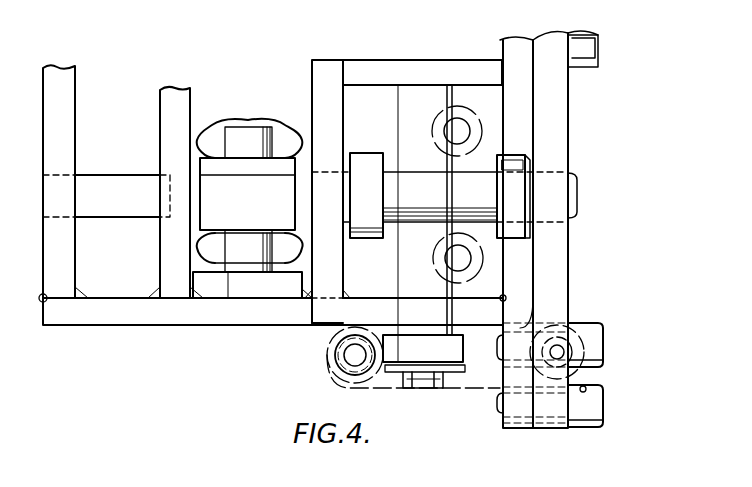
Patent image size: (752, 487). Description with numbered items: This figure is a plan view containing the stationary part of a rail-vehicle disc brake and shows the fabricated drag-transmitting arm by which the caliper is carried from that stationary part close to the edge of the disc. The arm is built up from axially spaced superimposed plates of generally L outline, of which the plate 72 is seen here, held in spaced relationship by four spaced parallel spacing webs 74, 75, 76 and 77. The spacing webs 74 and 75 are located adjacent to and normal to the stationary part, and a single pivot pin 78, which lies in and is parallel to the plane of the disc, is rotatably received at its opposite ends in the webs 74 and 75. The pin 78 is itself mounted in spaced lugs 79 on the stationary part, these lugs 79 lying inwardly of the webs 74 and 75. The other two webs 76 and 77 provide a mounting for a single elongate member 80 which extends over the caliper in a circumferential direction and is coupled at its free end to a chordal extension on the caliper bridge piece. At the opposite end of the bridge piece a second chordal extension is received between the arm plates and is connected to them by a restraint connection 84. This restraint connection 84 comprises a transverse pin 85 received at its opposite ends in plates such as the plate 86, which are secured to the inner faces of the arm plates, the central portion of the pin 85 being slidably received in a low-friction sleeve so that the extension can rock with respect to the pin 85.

The plate 72 is at (237, 307).
The spacing web 74 is at (548, 157).
The spacing web 75 is at (328, 110).
The spacing web 76 is at (168, 118).
The spacing web 77 is at (57, 98).
The pivot pin 78 is at (475, 190).
The lugs 79 is at (367, 163).
The elongate member 80 is at (107, 198).
The restraint connection 84 is at (246, 163).
The transverse pin 85 is at (252, 263).
The plate 86 is at (222, 282).